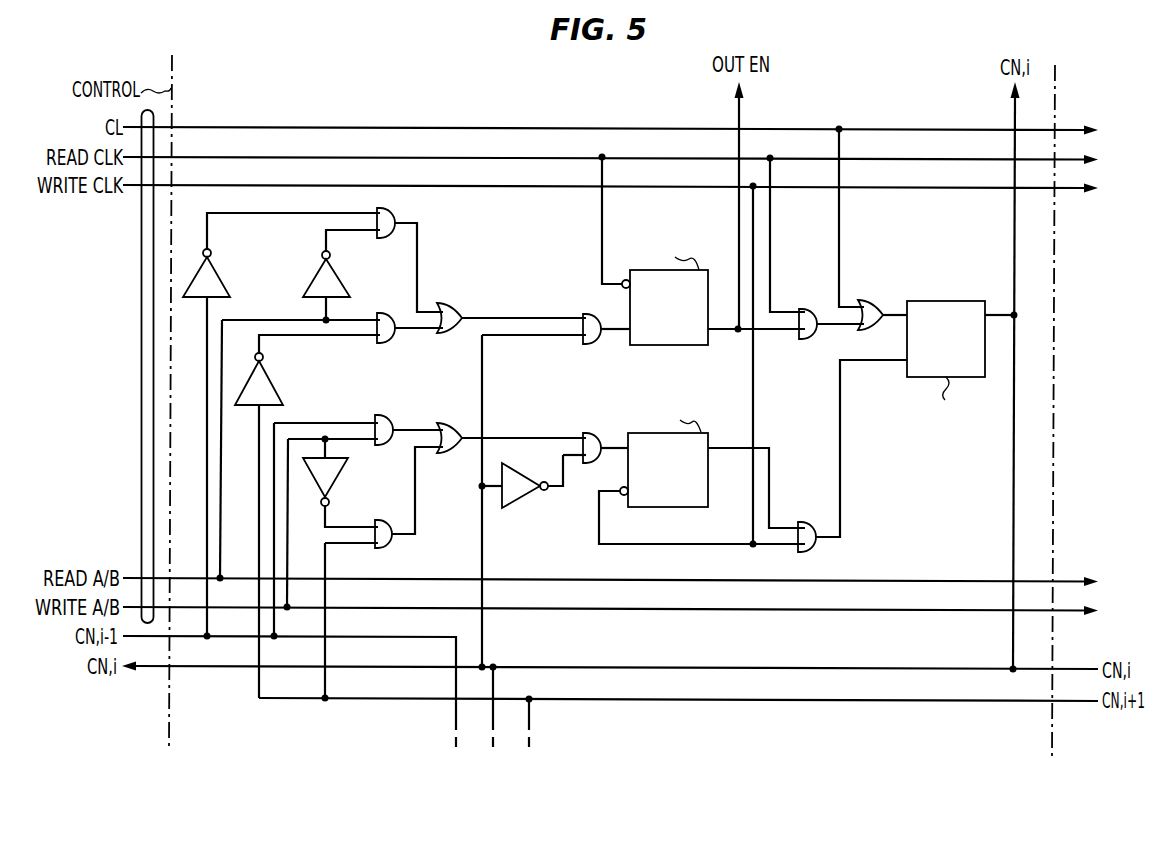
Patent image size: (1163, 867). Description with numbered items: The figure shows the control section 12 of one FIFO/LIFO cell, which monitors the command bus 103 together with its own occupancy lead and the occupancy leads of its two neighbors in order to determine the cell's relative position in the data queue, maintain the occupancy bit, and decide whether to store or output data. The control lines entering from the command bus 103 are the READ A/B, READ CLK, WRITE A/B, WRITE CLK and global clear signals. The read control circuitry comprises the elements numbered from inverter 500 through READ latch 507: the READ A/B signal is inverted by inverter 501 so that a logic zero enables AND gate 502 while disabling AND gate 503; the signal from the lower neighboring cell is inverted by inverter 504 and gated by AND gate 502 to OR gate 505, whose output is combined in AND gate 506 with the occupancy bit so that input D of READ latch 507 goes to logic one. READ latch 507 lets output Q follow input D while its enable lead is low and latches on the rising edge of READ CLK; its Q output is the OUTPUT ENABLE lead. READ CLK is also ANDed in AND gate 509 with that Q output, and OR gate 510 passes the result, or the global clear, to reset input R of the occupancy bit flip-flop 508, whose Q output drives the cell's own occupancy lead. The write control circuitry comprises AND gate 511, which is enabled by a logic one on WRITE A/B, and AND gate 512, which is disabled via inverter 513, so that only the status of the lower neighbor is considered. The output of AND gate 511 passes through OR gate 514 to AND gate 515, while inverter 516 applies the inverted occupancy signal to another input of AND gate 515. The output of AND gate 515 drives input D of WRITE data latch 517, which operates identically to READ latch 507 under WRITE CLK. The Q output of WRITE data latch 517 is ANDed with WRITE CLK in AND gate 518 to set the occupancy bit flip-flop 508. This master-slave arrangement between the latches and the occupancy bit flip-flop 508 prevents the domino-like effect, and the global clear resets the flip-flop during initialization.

The control section 12 is at (1054, 405).
The command bus 103 is at (141, 393).
The read control circuit element 500 is at (273, 380).
The inverter 501 is at (342, 277).
The AND gate 502 is at (395, 210).
The AND gate 503 is at (388, 343).
The inverter 504 is at (222, 277).
The OR gate 505 is at (447, 303).
The AND gate 506 is at (596, 345).
The READ latch 507 is at (681, 346).
The occupancy bit flip-flop 508 is at (960, 301).
The AND gate 509 is at (807, 308).
The OR gate 510 is at (870, 299).
The AND gate 511 is at (384, 416).
The AND gate 512 is at (390, 548).
The inverter 513 is at (338, 478).
The OR gate 514 is at (448, 423).
The AND gate 515 is at (590, 432).
The inverter 516 is at (524, 501).
The WRITE data latch 517 is at (679, 509).
The AND gate 518 is at (806, 521).